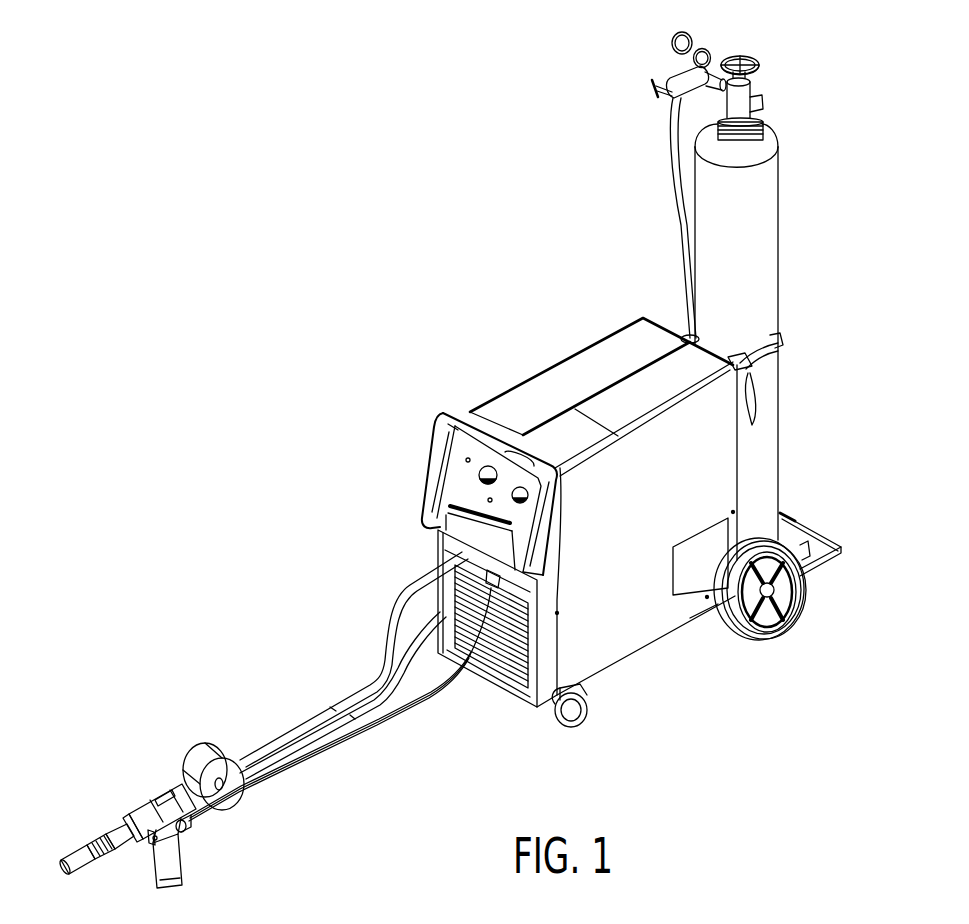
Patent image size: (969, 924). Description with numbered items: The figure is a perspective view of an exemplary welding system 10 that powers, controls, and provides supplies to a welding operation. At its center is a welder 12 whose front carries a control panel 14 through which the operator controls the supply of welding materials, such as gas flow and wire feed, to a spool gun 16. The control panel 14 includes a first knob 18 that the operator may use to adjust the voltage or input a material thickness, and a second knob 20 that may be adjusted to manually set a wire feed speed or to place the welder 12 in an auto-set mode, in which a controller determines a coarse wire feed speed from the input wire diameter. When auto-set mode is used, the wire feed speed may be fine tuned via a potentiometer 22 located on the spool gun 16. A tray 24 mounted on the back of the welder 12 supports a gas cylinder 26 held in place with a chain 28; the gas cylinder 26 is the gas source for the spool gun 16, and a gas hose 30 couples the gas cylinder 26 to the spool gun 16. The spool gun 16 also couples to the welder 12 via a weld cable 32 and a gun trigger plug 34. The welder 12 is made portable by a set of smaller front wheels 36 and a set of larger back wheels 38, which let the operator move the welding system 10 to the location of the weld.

The welding system 10 is at (503, 300).
The welder 12 is at (589, 354).
The control panel 14 is at (485, 437).
The spool gun 16 is at (160, 793).
The first knob 18 is at (479, 479).
The second knob 20 is at (522, 503).
The potentiometer 22 is at (183, 832).
The tray 24 is at (817, 557).
The gas cylinder 26 is at (773, 213).
The chain 28 is at (773, 357).
The gas hose 30 is at (680, 158).
The weld cable 32 is at (397, 605).
The gun trigger plug 34 is at (530, 592).
The front wheels 36 is at (572, 728).
The back wheels 38 is at (758, 642).